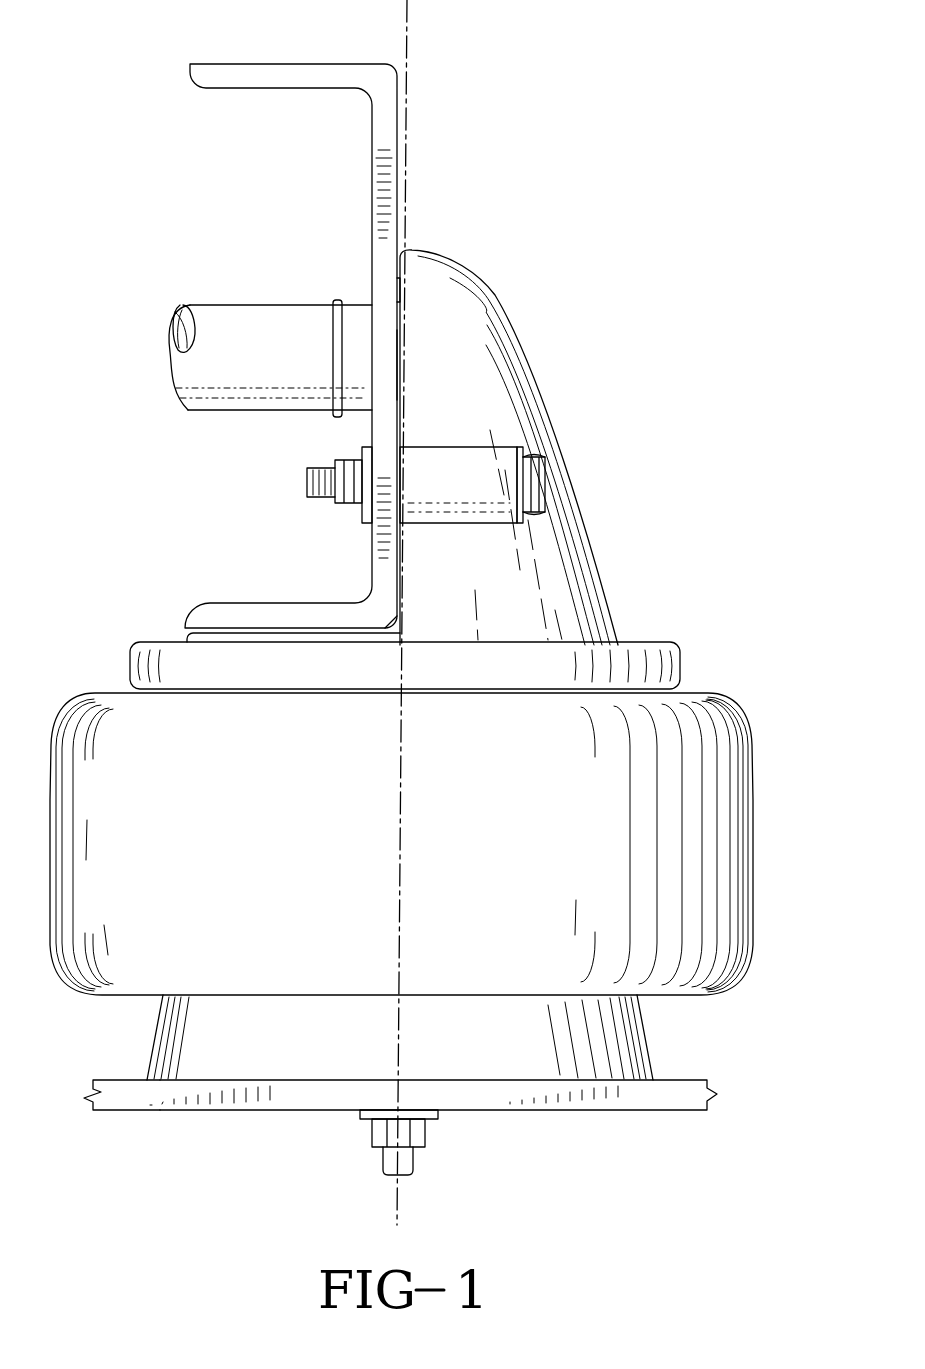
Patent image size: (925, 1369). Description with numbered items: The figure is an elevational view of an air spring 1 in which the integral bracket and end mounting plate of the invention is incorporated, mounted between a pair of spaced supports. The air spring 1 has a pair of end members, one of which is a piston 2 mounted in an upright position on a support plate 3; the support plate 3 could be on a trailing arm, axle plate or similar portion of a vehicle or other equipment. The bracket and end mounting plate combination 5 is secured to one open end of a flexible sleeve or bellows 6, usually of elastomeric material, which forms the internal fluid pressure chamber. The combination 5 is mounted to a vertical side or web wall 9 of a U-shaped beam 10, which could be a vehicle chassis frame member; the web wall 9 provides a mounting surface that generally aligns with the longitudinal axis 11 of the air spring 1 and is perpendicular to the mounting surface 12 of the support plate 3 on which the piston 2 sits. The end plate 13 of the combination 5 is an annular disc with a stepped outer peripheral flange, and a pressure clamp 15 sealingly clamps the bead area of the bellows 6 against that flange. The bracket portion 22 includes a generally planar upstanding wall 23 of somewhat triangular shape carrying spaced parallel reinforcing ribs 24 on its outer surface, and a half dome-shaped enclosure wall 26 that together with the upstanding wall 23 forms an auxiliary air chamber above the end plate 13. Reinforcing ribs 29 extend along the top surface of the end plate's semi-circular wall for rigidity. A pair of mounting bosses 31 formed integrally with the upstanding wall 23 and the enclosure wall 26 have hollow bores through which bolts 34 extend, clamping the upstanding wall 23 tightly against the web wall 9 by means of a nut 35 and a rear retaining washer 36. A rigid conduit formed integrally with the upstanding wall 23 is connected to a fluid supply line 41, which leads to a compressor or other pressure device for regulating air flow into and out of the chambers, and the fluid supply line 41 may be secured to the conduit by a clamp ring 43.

The air spring 1 is at (429, 818).
The piston 2 is at (646, 1040).
The support plate 3 is at (379, 1097).
The bracket and end mounting plate combination 5 is at (564, 447).
The flexible sleeve or bellows 6 is at (736, 834).
The web wall 9 is at (380, 165).
The U-shaped beam 10 is at (274, 314).
The longitudinal axis 11 is at (408, 32).
The mounting surface 12 is at (122, 1079).
The end plate 13 is at (252, 598).
The pressure clamp 15 is at (135, 664).
The bracket portion 22 is at (382, 362).
The upstanding wall 23 is at (385, 548).
The reinforcing ribs 24 is at (394, 292).
The enclosure wall 26 is at (478, 292).
The reinforcing ribs 29 is at (250, 630).
The mounting bosses 31 is at (452, 465).
The bolts 34 is at (318, 496).
The nut 35 is at (348, 462).
The rear retaining washer 36 is at (532, 455).
The fluid supply line 41 is at (234, 305).
The clamp ring 43 is at (339, 300).